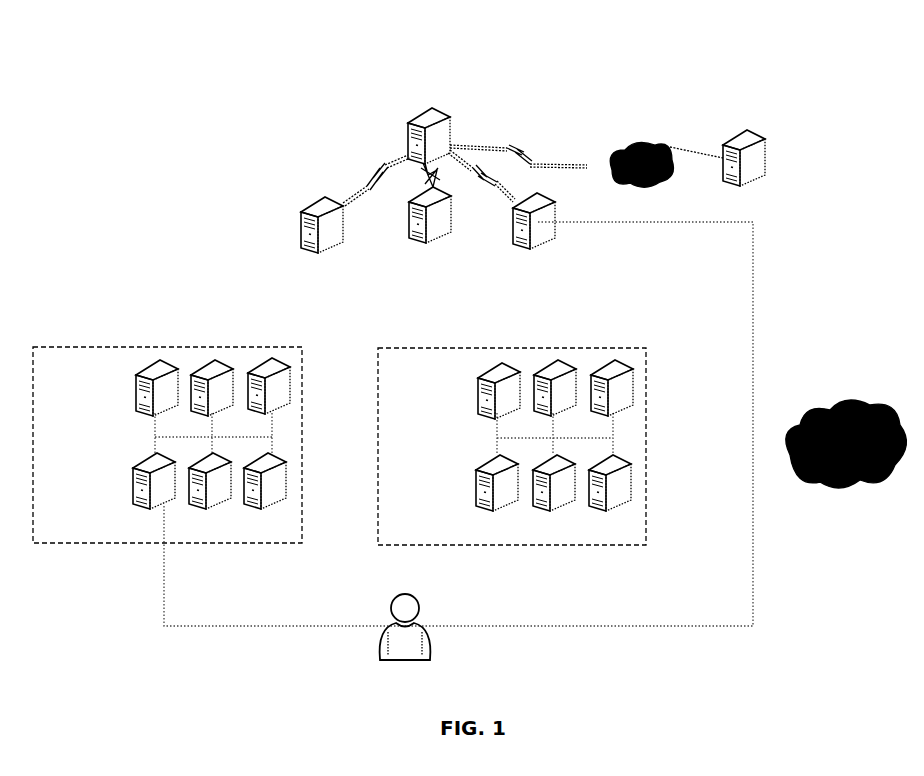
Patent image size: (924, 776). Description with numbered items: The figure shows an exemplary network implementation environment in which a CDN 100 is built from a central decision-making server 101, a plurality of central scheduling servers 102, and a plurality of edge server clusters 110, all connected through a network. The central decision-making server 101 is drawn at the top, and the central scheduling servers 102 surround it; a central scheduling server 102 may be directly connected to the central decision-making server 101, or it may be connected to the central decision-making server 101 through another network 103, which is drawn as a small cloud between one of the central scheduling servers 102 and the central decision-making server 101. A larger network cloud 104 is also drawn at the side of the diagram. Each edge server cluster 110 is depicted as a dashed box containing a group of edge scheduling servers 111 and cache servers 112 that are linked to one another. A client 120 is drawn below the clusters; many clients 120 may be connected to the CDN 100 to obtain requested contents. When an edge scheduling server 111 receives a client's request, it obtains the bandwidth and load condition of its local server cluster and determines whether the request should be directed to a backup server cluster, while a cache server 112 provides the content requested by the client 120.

The CDN 100 is at (269, 122).
The central decision-making server 101 is at (450, 122).
The central scheduling server 102 is at (312, 197).
The network 103 is at (645, 140).
The network cloud 104 is at (826, 406).
The edge server cluster 110 is at (339, 446).
The edge scheduling server 111 is at (136, 487).
The cache server 112 is at (157, 365).
The client 120 is at (402, 643).